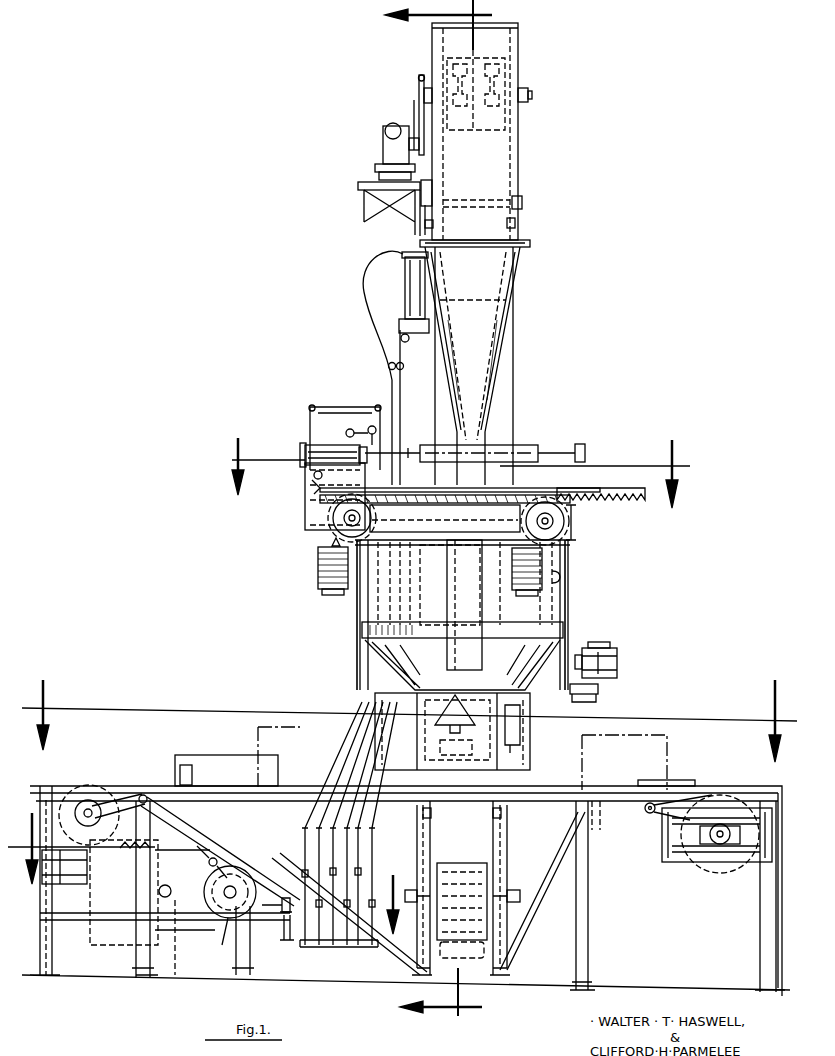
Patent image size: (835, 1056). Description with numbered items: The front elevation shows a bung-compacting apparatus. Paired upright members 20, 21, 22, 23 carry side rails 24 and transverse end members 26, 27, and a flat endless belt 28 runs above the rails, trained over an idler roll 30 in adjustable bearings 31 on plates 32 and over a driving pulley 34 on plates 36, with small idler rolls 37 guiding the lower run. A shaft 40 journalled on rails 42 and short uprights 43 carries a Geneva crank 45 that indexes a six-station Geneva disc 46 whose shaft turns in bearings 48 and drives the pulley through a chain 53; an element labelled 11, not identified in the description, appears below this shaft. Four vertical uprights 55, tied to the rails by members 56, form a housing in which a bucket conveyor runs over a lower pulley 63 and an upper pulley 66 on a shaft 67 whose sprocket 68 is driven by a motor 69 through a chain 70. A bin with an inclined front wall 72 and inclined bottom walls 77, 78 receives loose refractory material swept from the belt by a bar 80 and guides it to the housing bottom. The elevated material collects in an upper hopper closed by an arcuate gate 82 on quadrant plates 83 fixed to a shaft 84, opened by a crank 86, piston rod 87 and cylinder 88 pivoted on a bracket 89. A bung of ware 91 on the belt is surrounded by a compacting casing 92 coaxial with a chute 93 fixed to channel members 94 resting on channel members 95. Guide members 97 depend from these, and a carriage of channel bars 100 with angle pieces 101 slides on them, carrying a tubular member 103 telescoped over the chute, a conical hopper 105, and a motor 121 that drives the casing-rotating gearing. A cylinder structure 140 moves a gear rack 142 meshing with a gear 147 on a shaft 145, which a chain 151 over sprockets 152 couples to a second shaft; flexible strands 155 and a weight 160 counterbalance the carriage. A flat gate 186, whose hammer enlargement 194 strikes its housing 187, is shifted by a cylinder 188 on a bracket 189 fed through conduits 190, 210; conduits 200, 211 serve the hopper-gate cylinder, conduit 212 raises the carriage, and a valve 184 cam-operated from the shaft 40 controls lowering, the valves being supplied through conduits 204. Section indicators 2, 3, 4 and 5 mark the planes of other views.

The section line 2- 2 is at (438, 508).
The section line 3- 3 is at (457, 473).
The section line 4- 4 is at (409, 721).
The section line 5- 5 is at (203, 873).
The drive pulley support 11 is at (229, 908).
The upright member 20 is at (48, 951).
The upright member 21 is at (136, 960).
The upright member 22 is at (586, 923).
The upright member 23 is at (764, 911).
The side rail 24 is at (613, 808).
The end member 26 is at (38, 791).
The end member 27 is at (789, 891).
The endless belt 28 is at (604, 793).
The idler roll 30 is at (722, 866).
The adjustable bearings 31 is at (702, 860).
The plates 32 is at (664, 852).
The driving pulley 34 is at (80, 800).
The plates 36 is at (116, 793).
The idler rolls 37 is at (148, 806).
The shaft 40 is at (236, 884).
The rails 42 is at (55, 915).
The short uprights 43 is at (240, 957).
The Geneva crank 45 is at (216, 860).
The Geneva disc 46 is at (208, 980).
The bearings 48 is at (171, 892).
The chain 53 is at (105, 786).
The vertical uprights 55 is at (506, 392).
The horizontal members 56 is at (424, 813).
The lower pulley 63 is at (450, 860).
The pulley 66 is at (490, 66).
The shaft 67 is at (531, 96).
The sprocket 68 is at (418, 82).
The driving motor 69 is at (386, 147).
The chain 70 is at (413, 122).
The front wall 72 is at (450, 888).
The inclined bottom wall 77 is at (398, 957).
The inclined bottom wall 78 is at (527, 908).
The bar 80 is at (226, 770).
The arcuate gate member 82 is at (490, 240).
The quadrant plates 83 is at (427, 226).
The shaft 84 is at (521, 199).
The crank member 86 is at (432, 195).
The piston rod 87 is at (420, 200).
The cylinder 88 is at (406, 280).
The bracket 89 is at (413, 335).
The bung of ware 91 is at (258, 734).
The compacting casing 92 is at (452, 740).
The chute 93 is at (516, 478).
The channel members 94 is at (445, 518).
The channel members 95 is at (430, 546).
The guide members 97 is at (370, 600).
The channel bars 100 is at (462, 656).
The angle pieces 101 is at (360, 658).
The tubular member 103 is at (485, 605).
The conical hopper 105 is at (588, 690).
The motor 121 is at (618, 661).
The cylinder structure 140 is at (300, 490).
The gear rack 142 is at (613, 495).
The shaft 145 is at (572, 512).
The gear 147 is at (560, 545).
The chain 151 is at (330, 519).
The sprockets 152 is at (338, 531).
The flexible strand 155 is at (562, 581).
The weight 160 is at (318, 574).
The valve 184 is at (290, 932).
The gate 186 is at (556, 448).
The housing 187 is at (398, 450).
The cylinder 188 is at (324, 445).
The bracket 189 is at (313, 474).
The conduit 190 is at (370, 432).
The enlargement 194 is at (586, 454).
The conduit 200 is at (372, 304).
The conduits 204 is at (292, 925).
The conduit 210 is at (330, 406).
The conduit 211 is at (402, 376).
The conduit 212 is at (326, 948).